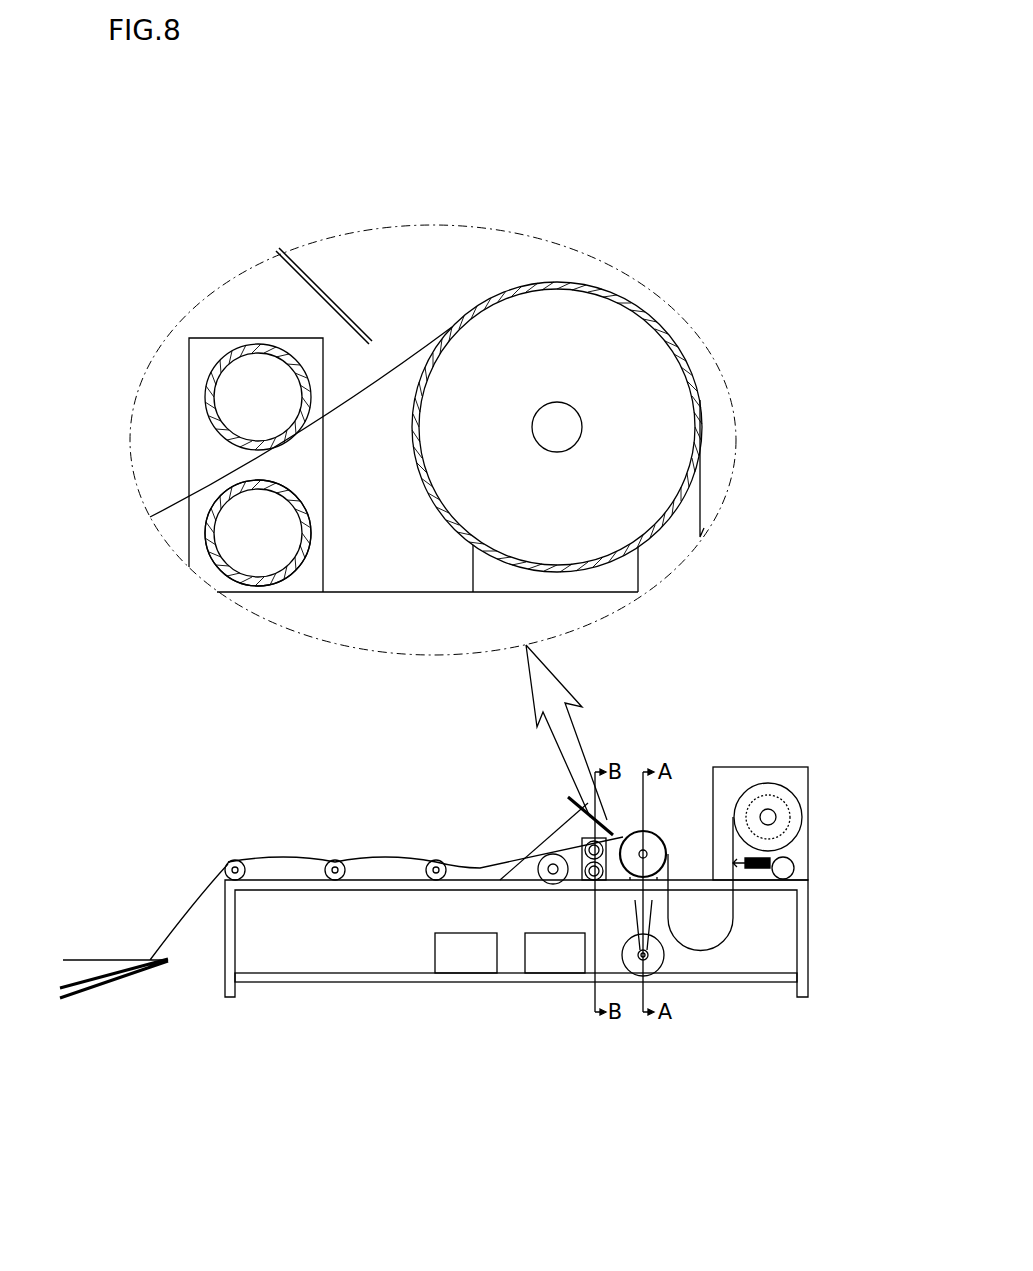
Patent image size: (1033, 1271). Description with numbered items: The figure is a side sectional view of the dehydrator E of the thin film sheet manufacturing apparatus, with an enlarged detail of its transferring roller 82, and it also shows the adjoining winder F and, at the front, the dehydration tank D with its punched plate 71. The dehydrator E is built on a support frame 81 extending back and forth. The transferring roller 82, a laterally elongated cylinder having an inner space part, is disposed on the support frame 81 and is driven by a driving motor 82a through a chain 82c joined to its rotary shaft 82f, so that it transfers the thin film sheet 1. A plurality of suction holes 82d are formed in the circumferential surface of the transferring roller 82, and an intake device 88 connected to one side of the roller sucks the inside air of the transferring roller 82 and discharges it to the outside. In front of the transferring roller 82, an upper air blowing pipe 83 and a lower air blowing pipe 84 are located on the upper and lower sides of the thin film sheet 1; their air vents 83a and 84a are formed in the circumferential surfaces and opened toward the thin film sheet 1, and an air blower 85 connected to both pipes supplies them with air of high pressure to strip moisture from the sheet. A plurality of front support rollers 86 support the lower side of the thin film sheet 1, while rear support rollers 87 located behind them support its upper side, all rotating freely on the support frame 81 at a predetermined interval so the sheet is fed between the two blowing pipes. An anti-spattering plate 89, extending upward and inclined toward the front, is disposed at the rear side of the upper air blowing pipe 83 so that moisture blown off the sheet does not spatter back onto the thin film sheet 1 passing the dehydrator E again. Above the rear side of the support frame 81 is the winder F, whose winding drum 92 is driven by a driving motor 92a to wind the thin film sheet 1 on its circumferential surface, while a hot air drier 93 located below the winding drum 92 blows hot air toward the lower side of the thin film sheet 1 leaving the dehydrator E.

The thin film sheet 1 is at (177, 508).
The punched plate 71 is at (807, 823).
The support frame 81 is at (223, 960).
The transferring roller 82 is at (618, 290).
The driving motor 82a is at (667, 962).
The chain 82c is at (707, 947).
The suction holes 82d is at (447, 322).
The rotary shaft 82f is at (580, 413).
The upper air blowing pipe 83 is at (227, 353).
The air vents 83a is at (210, 438).
The lower air blowing pipe 84 is at (297, 570).
The air vents 84a is at (258, 478).
The air blower 85 is at (435, 953).
The front support rollers 86 is at (253, 860).
The rear support rollers 87 is at (527, 830).
The intake device 88 is at (525, 953).
The anti-spattering plate 89 is at (323, 297).
The winding drum 92 is at (762, 780).
The driving motor 92a is at (787, 808).
The hot air drier 93 is at (794, 863).
The dehydration tank D is at (125, 973).
The dehydrator E is at (217, 857).
The winder F is at (787, 760).